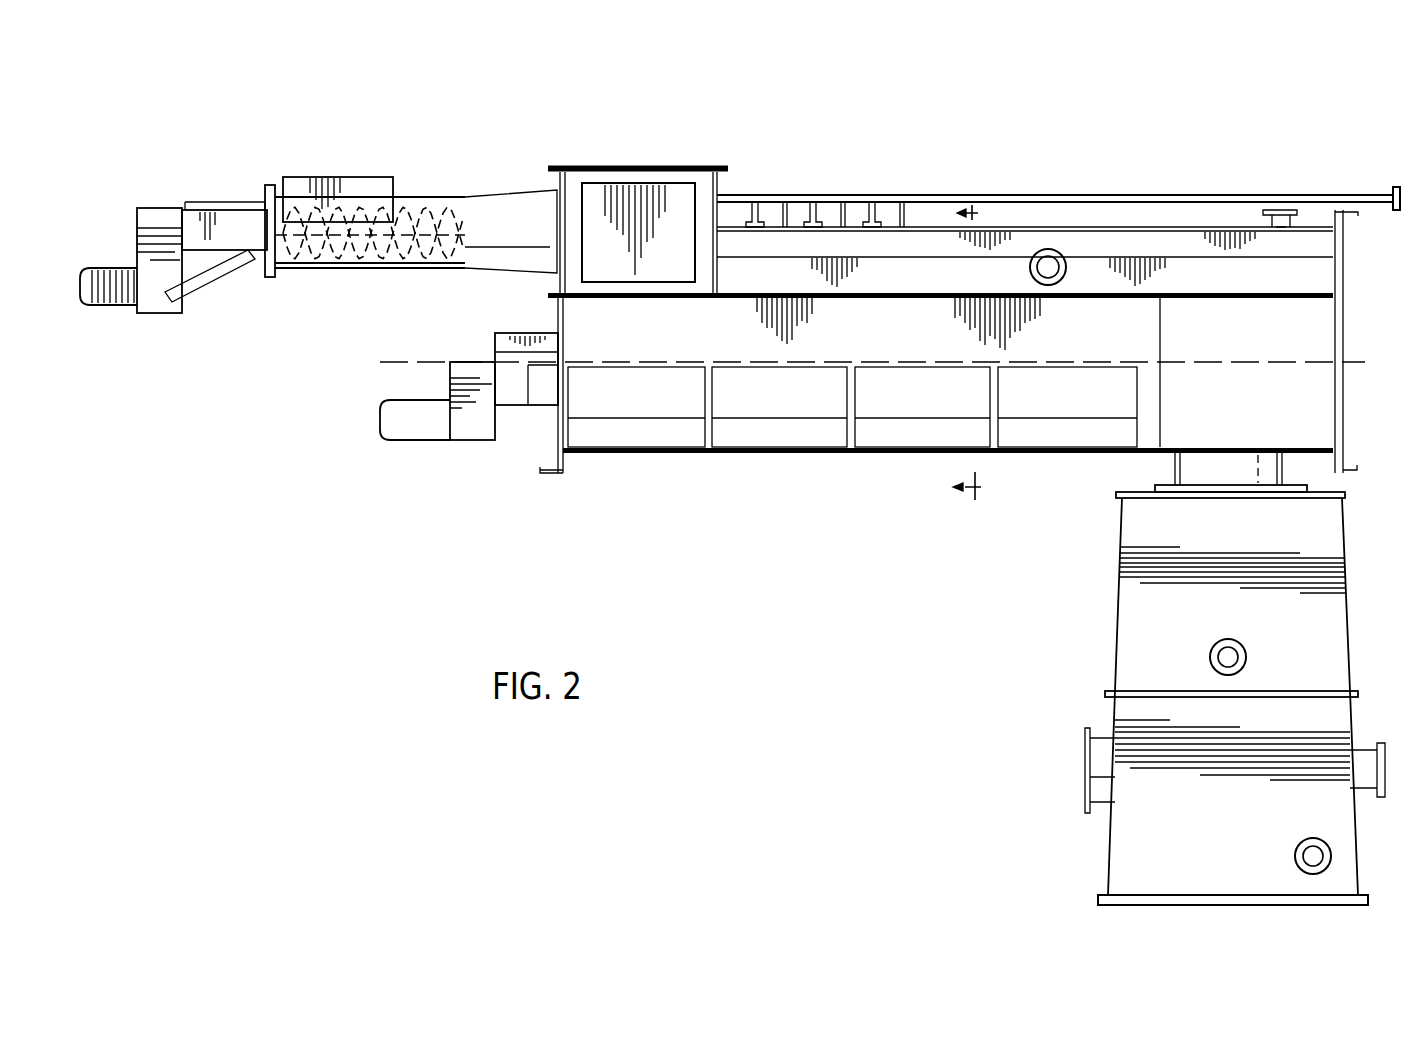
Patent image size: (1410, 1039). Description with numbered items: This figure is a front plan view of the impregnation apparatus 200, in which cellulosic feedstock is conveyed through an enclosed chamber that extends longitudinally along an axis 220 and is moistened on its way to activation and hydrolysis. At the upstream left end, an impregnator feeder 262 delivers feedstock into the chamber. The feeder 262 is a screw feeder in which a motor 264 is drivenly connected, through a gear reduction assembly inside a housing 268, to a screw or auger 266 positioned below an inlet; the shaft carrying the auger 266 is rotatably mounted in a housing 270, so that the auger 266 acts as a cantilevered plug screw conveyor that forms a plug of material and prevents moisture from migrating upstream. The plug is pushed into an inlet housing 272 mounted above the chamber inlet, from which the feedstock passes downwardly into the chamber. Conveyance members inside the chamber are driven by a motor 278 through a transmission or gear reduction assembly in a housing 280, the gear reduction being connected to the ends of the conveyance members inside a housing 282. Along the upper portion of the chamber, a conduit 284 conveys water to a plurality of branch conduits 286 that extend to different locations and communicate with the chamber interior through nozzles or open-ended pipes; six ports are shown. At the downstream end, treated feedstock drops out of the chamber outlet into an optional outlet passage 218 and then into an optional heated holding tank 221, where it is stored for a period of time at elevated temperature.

The apparatus 200 is at (1245, 121).
The outlet passage 218 is at (1182, 460).
The axis 220 is at (1343, 362).
The heated holding tank 221 is at (1112, 595).
The impregnator feeder 262 is at (318, 298).
The motor 264 is at (110, 306).
The screw or auger 266 is at (364, 200).
The housing 268 is at (137, 238).
The housing 270 is at (222, 212).
The inlet housing 272 is at (606, 165).
The motor 278 is at (403, 430).
The housing 280 is at (467, 427).
The housing 282 is at (512, 398).
The conduit 284 is at (1068, 194).
The branch conduits 286 is at (828, 210).